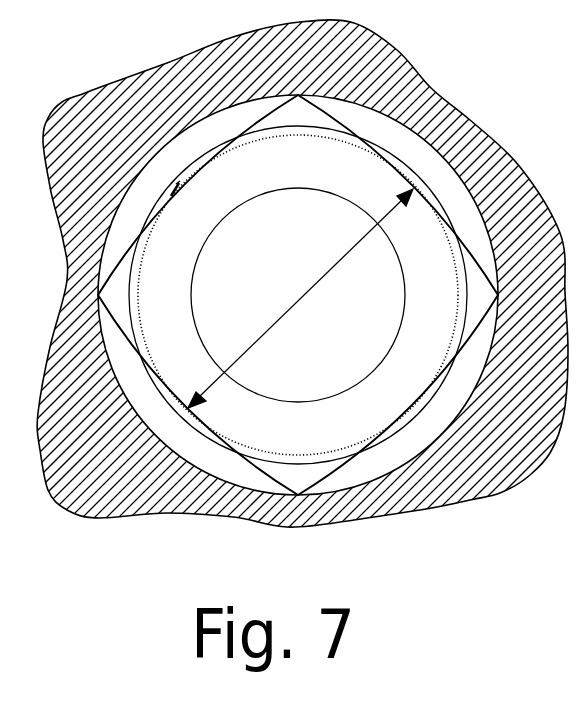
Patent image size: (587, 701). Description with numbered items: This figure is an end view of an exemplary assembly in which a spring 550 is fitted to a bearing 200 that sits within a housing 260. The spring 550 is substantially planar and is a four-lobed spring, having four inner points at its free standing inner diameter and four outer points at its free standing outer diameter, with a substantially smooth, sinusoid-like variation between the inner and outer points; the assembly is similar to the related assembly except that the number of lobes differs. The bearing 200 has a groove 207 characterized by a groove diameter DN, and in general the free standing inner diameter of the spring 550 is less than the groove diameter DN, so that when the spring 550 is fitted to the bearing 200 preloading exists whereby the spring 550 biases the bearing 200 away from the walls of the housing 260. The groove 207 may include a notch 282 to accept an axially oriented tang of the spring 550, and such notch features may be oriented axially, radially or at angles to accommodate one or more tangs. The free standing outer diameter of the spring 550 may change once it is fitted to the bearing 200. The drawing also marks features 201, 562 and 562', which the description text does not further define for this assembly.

The housing 260 is at (518, 465).
The spring 550 is at (410, 183).
The groove 207 is at (346, 447).
The bearing 200 is at (320, 437).
The pipe bore 201 is at (346, 341).
The notch 282 is at (175, 188).
The contact line 562' is at (225, 233).
The contact line 562 is at (220, 251).
The groove diameter DN is at (300, 298).